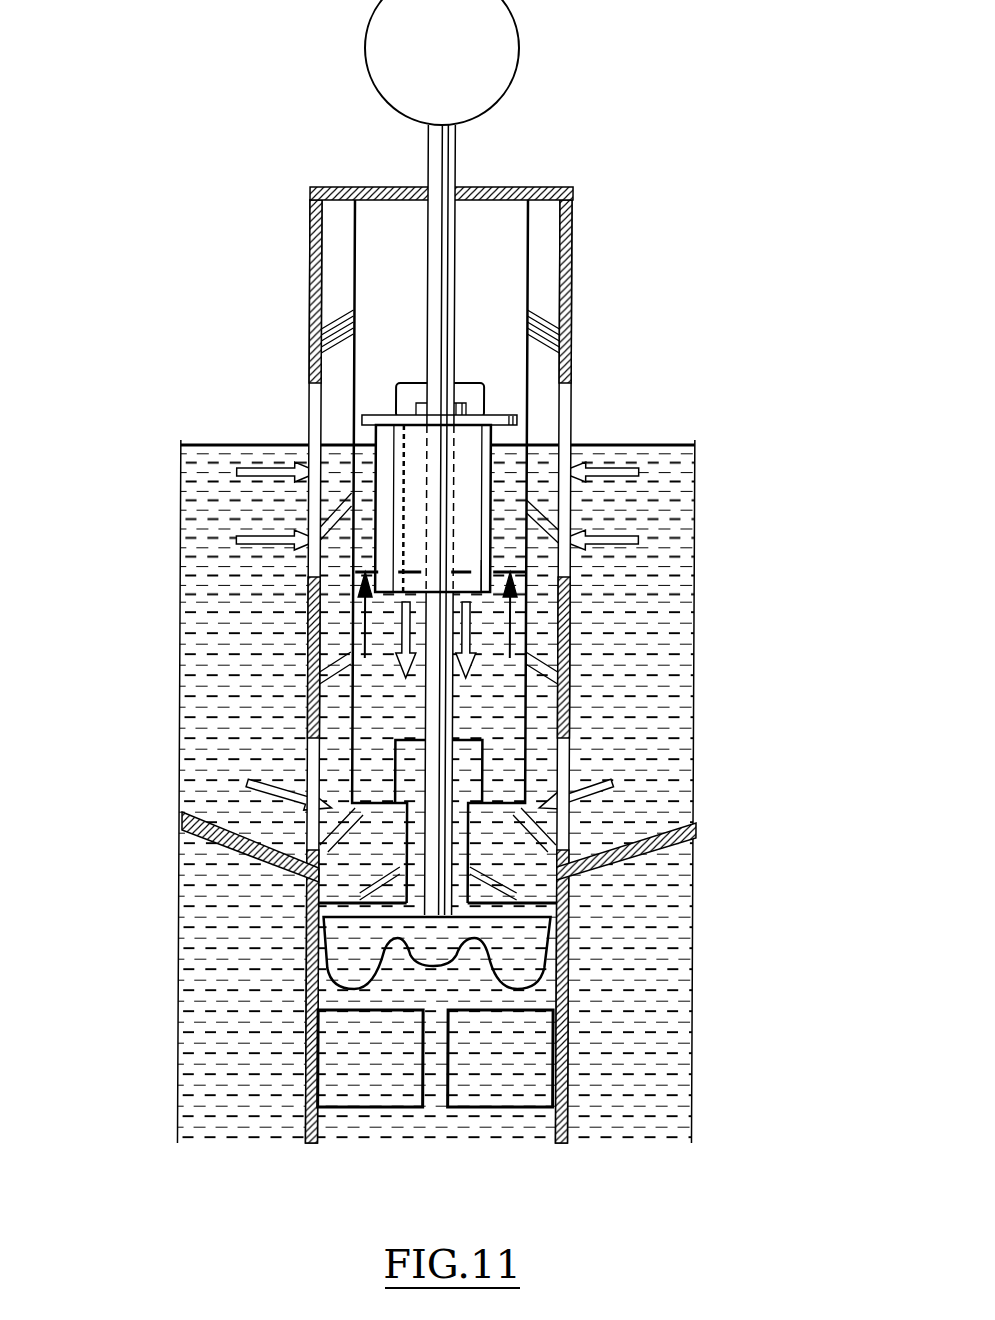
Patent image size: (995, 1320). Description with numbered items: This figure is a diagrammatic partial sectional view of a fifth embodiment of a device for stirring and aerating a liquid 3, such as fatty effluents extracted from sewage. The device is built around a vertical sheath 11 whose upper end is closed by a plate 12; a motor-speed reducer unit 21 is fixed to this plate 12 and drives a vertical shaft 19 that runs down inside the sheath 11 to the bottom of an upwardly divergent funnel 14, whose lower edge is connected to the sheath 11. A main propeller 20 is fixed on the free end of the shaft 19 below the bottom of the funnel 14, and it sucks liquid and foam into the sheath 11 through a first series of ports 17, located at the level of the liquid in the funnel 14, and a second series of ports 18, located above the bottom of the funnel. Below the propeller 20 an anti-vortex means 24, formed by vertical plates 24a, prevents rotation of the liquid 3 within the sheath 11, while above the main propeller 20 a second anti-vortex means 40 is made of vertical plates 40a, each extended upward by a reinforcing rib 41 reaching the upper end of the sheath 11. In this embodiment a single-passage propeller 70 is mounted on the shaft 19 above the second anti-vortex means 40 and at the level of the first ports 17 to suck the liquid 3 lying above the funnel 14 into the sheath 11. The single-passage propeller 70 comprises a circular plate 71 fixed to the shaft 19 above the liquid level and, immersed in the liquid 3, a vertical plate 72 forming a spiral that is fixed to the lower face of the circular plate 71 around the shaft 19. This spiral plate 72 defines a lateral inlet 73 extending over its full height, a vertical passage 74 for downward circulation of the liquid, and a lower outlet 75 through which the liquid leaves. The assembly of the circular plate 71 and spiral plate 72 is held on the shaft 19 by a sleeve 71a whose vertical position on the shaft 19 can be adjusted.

The liquid 3 is at (652, 565).
The sheath 11 is at (560, 1123).
The plate 12 is at (497, 188).
The funnel 14 is at (655, 852).
The first series of ports 17 is at (317, 400).
The second series of ports 18 is at (572, 767).
The vertical shaft 19 is at (443, 315).
The main propeller 20 is at (527, 947).
The motor-speed reducer unit 21 is at (517, 84).
The anti-vortex means 24 is at (325, 1071).
The vertical plates 24a is at (522, 1067).
The second anti-vortex means 40 is at (343, 899).
The vertical plates 40a is at (301, 877).
The reinforcing rib 41 is at (345, 267).
The single-passage propeller 70 is at (500, 545).
The circular plate 71 is at (510, 413).
The sleeve 71a is at (417, 408).
The vertical plate 72 is at (377, 527).
The lateral inlet 73 is at (387, 476).
The vertical passage 74 is at (482, 500).
The lower outlet 75 is at (478, 593).